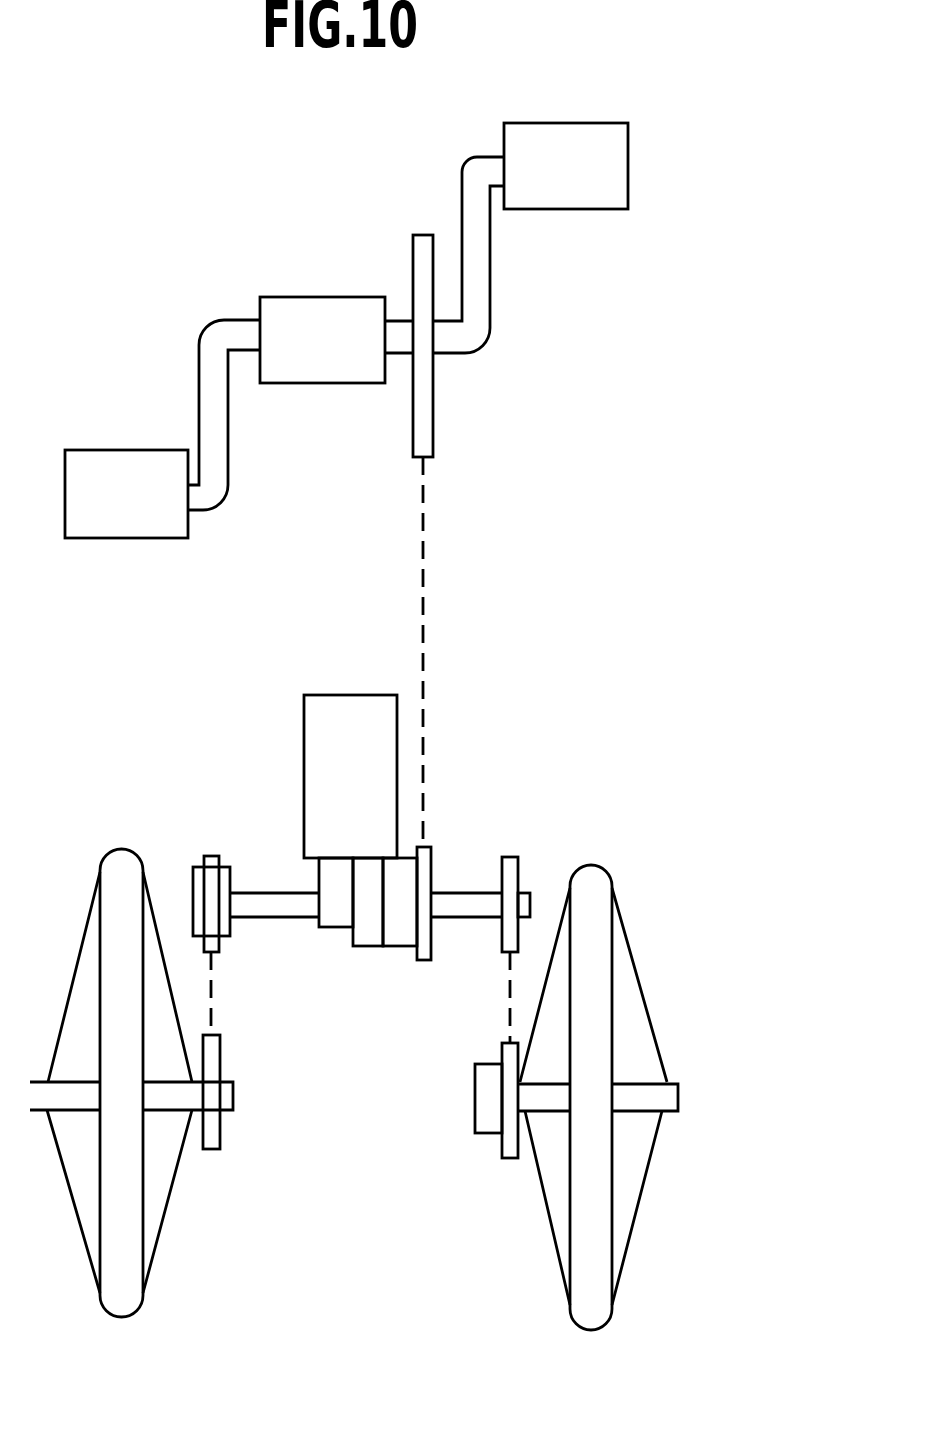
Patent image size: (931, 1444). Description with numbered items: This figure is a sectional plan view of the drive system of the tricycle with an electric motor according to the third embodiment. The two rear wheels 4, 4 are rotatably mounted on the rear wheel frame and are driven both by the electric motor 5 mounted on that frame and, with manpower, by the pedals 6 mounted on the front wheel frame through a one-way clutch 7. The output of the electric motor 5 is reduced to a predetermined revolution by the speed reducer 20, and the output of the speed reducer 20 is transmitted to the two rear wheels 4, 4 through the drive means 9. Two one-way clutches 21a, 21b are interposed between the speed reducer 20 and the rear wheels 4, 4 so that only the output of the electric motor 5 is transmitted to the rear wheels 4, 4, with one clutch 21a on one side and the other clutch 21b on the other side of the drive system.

The rear wheel 4 is at (100, 878).
The electric motor 5 is at (330, 705).
The pedals 6 is at (600, 203).
The one-way clutch 7 is at (400, 946).
The drive means 9 is at (440, 557).
The speed reducer 20 is at (353, 946).
The one-way clutch 21a is at (195, 868).
The one-way clutch 21b is at (475, 1133).